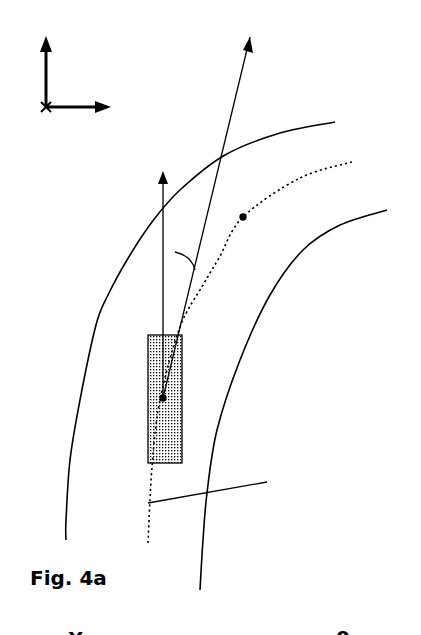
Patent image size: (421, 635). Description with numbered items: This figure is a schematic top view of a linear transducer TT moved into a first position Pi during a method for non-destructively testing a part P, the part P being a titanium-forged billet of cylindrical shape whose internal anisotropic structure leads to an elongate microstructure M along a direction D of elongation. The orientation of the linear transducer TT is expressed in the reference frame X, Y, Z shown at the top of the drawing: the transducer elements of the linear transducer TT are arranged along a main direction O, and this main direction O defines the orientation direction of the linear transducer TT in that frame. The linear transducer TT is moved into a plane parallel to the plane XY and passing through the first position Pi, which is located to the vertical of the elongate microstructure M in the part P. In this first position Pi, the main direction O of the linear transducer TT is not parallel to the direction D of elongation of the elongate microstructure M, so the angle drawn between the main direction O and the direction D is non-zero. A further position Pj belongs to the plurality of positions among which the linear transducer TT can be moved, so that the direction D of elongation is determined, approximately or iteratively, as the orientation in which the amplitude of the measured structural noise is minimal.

The X axis of reference frame X is at (56, 59).
The Y axis of reference frame Y is at (89, 120).
The Z axis of reference frame Z is at (30, 118).
The main direction O is at (160, 228).
The direction of elongation D is at (236, 101).
The linear transducer TT is at (127, 418).
The first position Pi is at (166, 400).
The position Pj is at (246, 218).
The elongate microstructure M is at (219, 487).
The part P is at (203, 540).